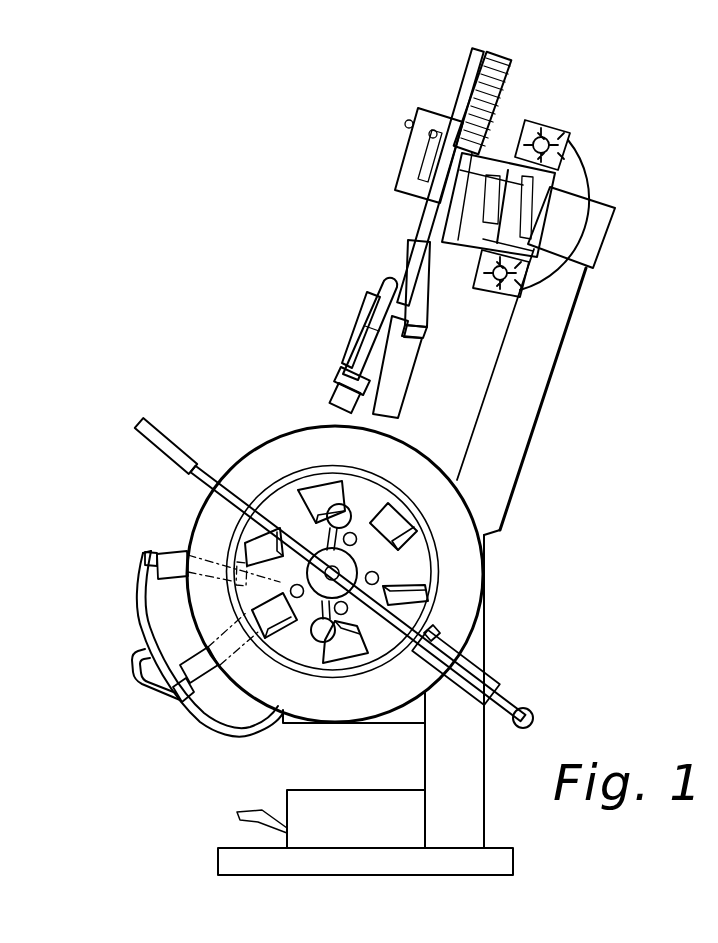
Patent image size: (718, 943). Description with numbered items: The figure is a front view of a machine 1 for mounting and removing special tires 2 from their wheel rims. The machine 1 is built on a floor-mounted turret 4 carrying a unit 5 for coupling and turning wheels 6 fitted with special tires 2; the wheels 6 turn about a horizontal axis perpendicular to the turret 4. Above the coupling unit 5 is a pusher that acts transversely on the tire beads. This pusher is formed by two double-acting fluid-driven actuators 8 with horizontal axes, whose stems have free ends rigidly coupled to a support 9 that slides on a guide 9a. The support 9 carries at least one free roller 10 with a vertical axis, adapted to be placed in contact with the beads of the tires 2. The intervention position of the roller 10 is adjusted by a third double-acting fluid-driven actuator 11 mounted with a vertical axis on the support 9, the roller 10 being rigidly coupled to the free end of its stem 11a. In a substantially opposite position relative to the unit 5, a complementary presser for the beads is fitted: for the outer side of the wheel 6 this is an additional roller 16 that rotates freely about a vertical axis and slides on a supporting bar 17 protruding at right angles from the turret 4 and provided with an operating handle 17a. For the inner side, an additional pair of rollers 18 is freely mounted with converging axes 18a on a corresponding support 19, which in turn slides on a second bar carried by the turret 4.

The machine for mounting and removing special tires 1 is at (330, 150).
The special tires 2 is at (462, 547).
The floor-mounted turret 4 is at (537, 407).
The unit for coupling and turning wheels 5 is at (383, 566).
The wheels 6 is at (316, 732).
The double-acting fluid-driven actuators 8 is at (530, 123).
The support 9 is at (497, 232).
The guide 9a is at (530, 217).
The free roller 10 is at (402, 387).
The third double-acting fluid-driven actuator 11 is at (473, 140).
The stem of the third actuator 11a is at (427, 317).
The additional roller 16 is at (458, 693).
The supporting bar 17 is at (533, 711).
The operating handle 17a is at (450, 614).
The additional pair of rollers 18 is at (167, 580).
The converging axes 18a is at (126, 557).
The support for the pair of rollers 19 is at (138, 630).